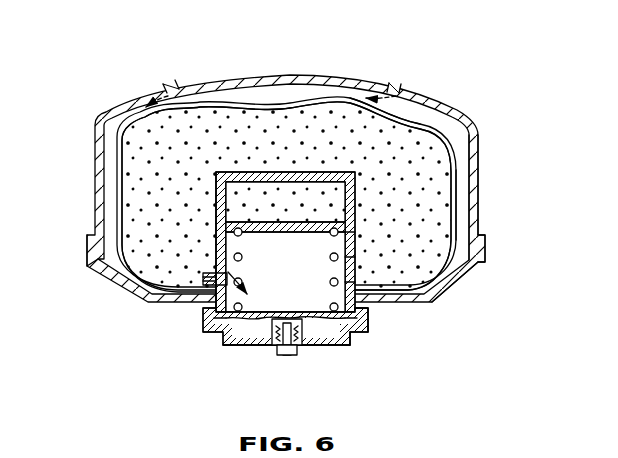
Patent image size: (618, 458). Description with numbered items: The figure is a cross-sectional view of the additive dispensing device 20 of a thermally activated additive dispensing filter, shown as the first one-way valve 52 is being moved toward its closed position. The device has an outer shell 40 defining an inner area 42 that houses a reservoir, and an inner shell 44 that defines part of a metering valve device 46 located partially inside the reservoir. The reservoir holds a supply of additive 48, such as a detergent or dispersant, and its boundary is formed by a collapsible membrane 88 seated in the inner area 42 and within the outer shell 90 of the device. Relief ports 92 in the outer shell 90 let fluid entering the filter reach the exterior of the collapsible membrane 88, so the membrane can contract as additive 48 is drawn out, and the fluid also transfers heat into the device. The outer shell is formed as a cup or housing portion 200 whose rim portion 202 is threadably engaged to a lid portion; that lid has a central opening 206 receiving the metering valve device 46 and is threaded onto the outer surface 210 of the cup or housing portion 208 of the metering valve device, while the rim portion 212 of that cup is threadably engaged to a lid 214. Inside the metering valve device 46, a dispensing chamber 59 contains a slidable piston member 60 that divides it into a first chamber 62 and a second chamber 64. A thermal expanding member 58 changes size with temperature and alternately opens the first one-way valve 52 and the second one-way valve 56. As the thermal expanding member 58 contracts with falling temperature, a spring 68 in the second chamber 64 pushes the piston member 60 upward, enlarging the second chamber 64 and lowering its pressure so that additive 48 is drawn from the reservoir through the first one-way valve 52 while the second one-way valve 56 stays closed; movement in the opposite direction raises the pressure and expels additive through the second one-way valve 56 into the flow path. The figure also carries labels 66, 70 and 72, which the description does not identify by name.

The additive dispensing device 20 is at (88, 152).
The outer shell 40 is at (92, 193).
The inner area 42 is at (103, 230).
The inner shell 44 is at (215, 170).
The metering valve device 46 is at (215, 185).
The additive 48 is at (295, 142).
The first one-way valve 52 is at (213, 270).
The second one-way valve 56 is at (285, 357).
The thermal expanding member 58 is at (330, 172).
The dispensing chamber 59 is at (294, 254).
The slidable piston member 60 is at (360, 216).
The first chamber 62 is at (228, 185).
The second chamber 64 is at (350, 236).
The seal 66 is at (355, 231).
The spring 68 is at (250, 350).
The port 70 is at (205, 256).
The bottom cover 72 is at (330, 348).
The collapsible membrane 88 is at (455, 176).
The outer shell 90 is at (478, 143).
The relief ports 92 is at (171, 82).
The cup or housing portion 200 is at (478, 196).
The rim portion 202 is at (485, 243).
The central opening 206 is at (353, 274).
The cup or housing portion 208 is at (357, 183).
The outer surface 210 is at (353, 256).
The rim portion 212 is at (367, 321).
The lid 214 is at (360, 340).